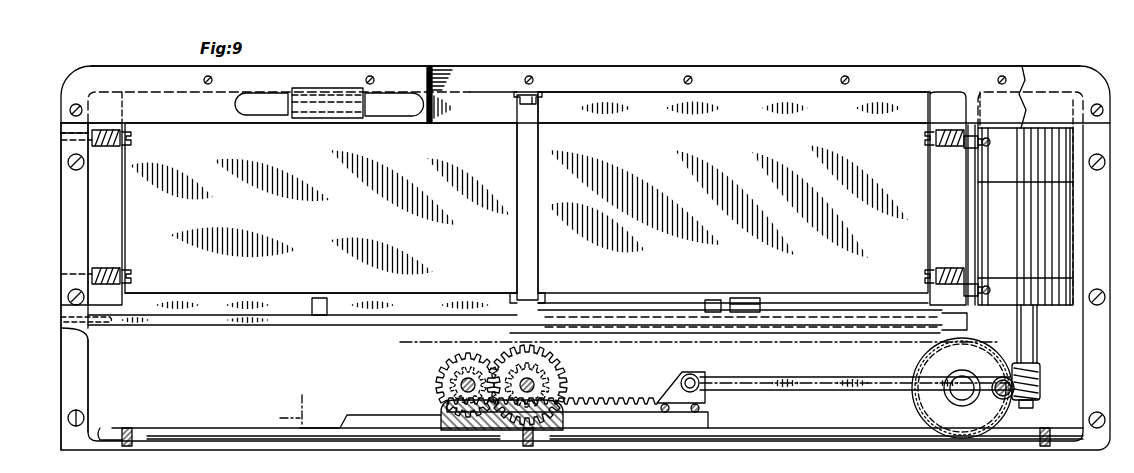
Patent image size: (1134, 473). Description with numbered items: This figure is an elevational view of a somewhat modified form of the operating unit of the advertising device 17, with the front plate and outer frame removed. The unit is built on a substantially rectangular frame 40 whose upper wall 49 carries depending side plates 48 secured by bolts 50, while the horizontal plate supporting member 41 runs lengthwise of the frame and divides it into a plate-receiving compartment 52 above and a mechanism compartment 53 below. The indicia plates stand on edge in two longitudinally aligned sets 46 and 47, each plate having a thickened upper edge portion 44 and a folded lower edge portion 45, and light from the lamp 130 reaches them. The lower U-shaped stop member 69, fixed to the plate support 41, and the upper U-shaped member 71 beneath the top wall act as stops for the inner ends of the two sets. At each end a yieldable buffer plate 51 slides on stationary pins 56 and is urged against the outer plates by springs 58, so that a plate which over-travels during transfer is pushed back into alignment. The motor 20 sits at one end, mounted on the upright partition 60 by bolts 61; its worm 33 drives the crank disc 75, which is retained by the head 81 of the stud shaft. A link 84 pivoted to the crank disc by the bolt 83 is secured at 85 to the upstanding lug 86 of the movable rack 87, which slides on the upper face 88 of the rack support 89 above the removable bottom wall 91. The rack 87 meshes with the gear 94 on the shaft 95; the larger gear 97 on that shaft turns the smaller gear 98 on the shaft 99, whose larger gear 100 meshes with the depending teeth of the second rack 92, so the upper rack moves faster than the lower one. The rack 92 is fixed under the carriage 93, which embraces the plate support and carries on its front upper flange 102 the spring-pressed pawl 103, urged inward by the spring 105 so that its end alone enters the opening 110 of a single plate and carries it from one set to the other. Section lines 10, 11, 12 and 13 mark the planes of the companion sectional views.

The advertising device 17 is at (858, 60).
The motor 20 is at (1025, 198).
The worm 33 is at (1036, 396).
The frame 40 is at (636, 66).
The plate supporting member 41 is at (209, 322).
The upper edge portion 44 is at (765, 100).
The lower edge portion 45 is at (408, 305).
The set of plates 46 is at (186, 290).
The set of plates 47 is at (820, 326).
The depending side plates 48 is at (418, 78).
The upper wall 49 is at (548, 86).
The bolts 50 is at (371, 76).
The yieldable buffer plate 51 is at (126, 232).
The plate-receiving compartment 52 is at (94, 207).
The mechanism compartment 53 is at (99, 365).
The stationary pins 56 is at (133, 140).
The springs 58 is at (527, 198).
The upright partition 60 is at (970, 233).
The bolts 61 is at (965, 150).
The lower stop member 69 is at (518, 293).
The upper U-shaped member 71 is at (516, 99).
The crank disc 75 is at (915, 400).
The head 81 is at (960, 392).
The bolt 83 is at (998, 392).
The link 84 is at (815, 390).
The pivot connection 85 is at (700, 380).
The upstanding lug 86 is at (703, 400).
The movable rack 87 is at (640, 400).
The upper face 88 is at (368, 414).
The rack support 89 is at (392, 430).
The bottom wall 91 is at (305, 410).
The second rack 92 is at (598, 313).
The carriage 93 is at (625, 332).
The gear 94 is at (445, 392).
The shaft 95 is at (462, 378).
The larger gear 97 is at (430, 378).
The smaller gear 98 is at (552, 387).
The shaft 99 is at (532, 384).
The larger gear 100 is at (566, 398).
The front upper flange 102 is at (834, 325).
The spring-pressed pawl 103 is at (712, 300).
The spring 105 is at (752, 300).
The opening 110 is at (310, 302).
The lamp 130 is at (240, 102).
The section line 10- 10 is at (135, 290).
The partition 11 is at (100, 418).
The driver's compartment 12 is at (500, 42).
The passenger compartment 13 is at (695, 42).